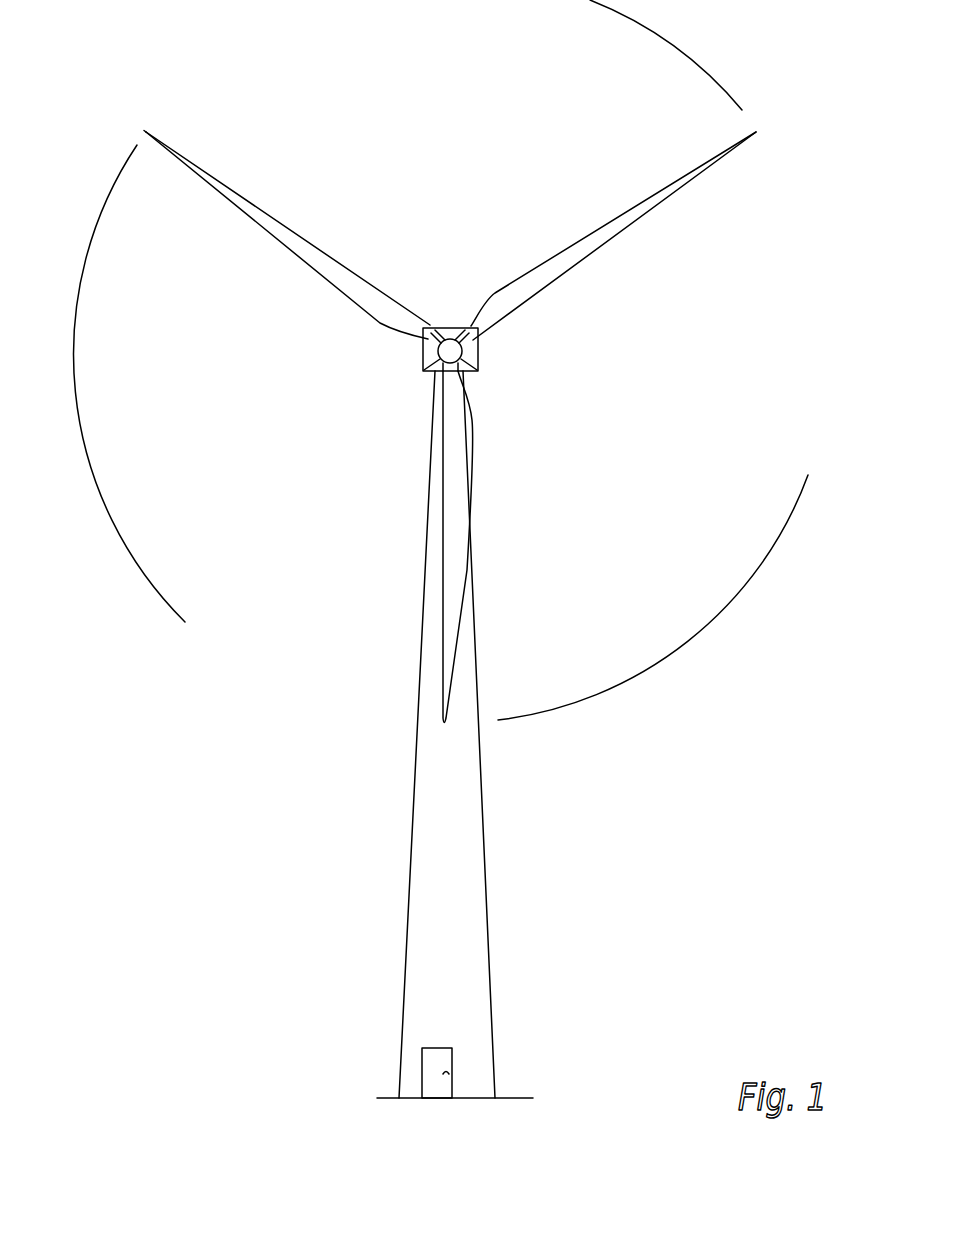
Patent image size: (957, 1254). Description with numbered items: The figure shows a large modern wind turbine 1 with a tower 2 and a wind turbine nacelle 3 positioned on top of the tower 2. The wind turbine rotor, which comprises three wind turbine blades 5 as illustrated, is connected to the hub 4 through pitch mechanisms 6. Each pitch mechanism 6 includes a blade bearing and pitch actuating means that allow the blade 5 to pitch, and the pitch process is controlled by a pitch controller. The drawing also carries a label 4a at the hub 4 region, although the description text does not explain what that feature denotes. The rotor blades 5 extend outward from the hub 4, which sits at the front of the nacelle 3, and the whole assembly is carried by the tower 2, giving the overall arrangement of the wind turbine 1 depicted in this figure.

The wind turbine 1 is at (450, 615).
The tower 2 is at (472, 830).
The wind turbine nacelle 3 is at (479, 378).
The hub 4 is at (453, 369).
The hub spinner / blade bearing 4a is at (479, 347).
The wind turbine blades 5 is at (450, 655).
The pitch mechanisms 6 is at (160, 660).